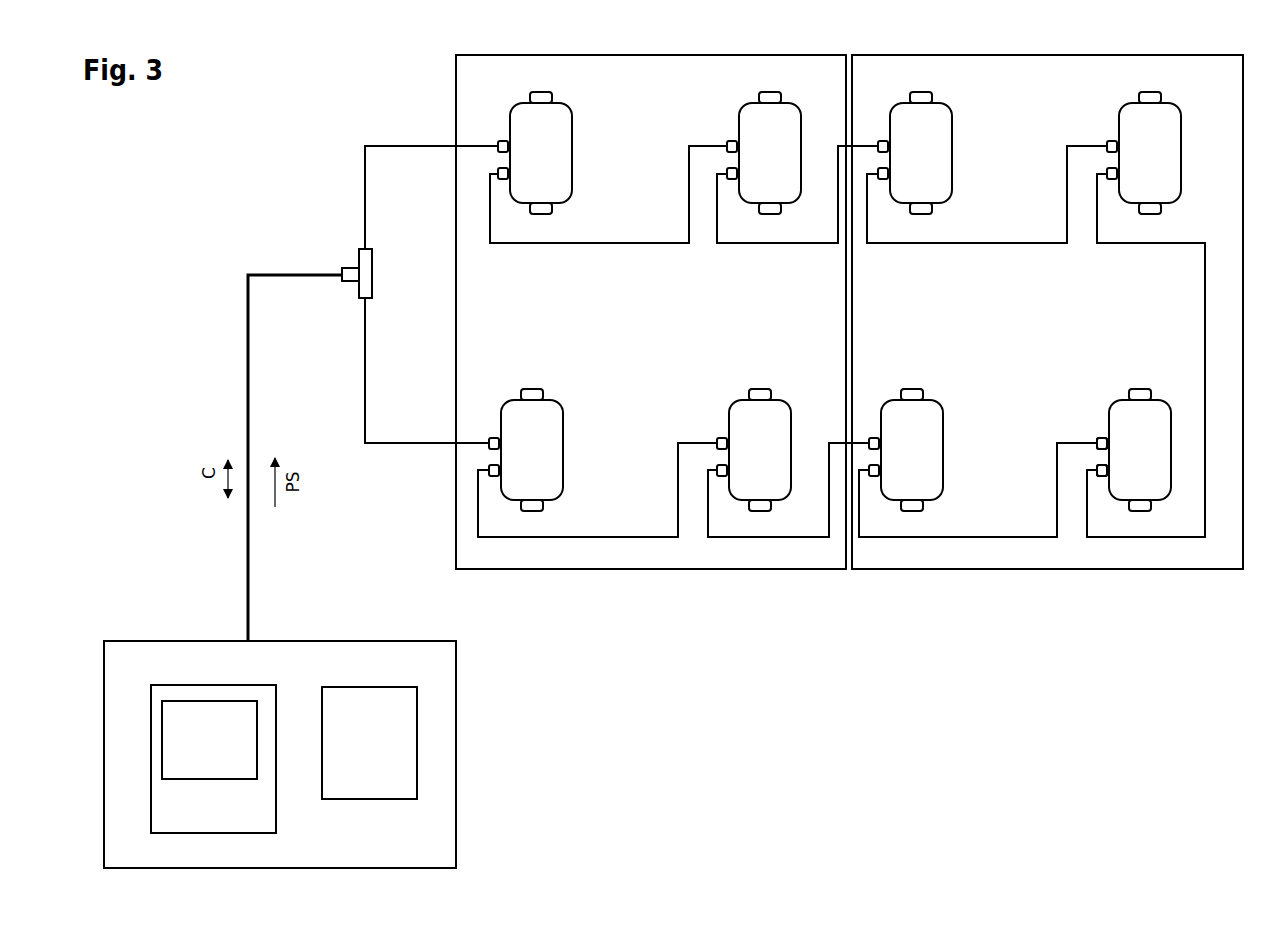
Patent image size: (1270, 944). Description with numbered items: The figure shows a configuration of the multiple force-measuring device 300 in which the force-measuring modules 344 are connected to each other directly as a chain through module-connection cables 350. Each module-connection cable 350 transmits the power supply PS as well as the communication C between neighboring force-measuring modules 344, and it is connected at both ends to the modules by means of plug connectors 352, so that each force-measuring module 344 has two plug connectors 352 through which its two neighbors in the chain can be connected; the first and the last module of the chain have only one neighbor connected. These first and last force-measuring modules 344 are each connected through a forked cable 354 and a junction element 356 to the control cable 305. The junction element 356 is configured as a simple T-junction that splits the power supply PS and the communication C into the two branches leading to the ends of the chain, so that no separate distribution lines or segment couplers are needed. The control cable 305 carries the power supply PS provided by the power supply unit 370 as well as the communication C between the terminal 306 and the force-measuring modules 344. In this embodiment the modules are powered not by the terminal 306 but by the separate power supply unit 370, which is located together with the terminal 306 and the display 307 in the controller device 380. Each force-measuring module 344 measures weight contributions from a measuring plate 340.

The multiple force-measuring device 300 is at (1192, 815).
The control cable 305 is at (253, 388).
The terminal 306 is at (240, 697).
The display 307 is at (230, 728).
The measuring plate 340 is at (1050, 355).
The force-measuring module 344 is at (1145, 470).
The module-connection cable 350 is at (995, 540).
The plug connector 352 is at (1097, 447).
The forked cable 354 is at (365, 200).
The junction element 356 is at (357, 268).
The power supply unit 370 is at (392, 751).
The controller device 380 is at (352, 696).